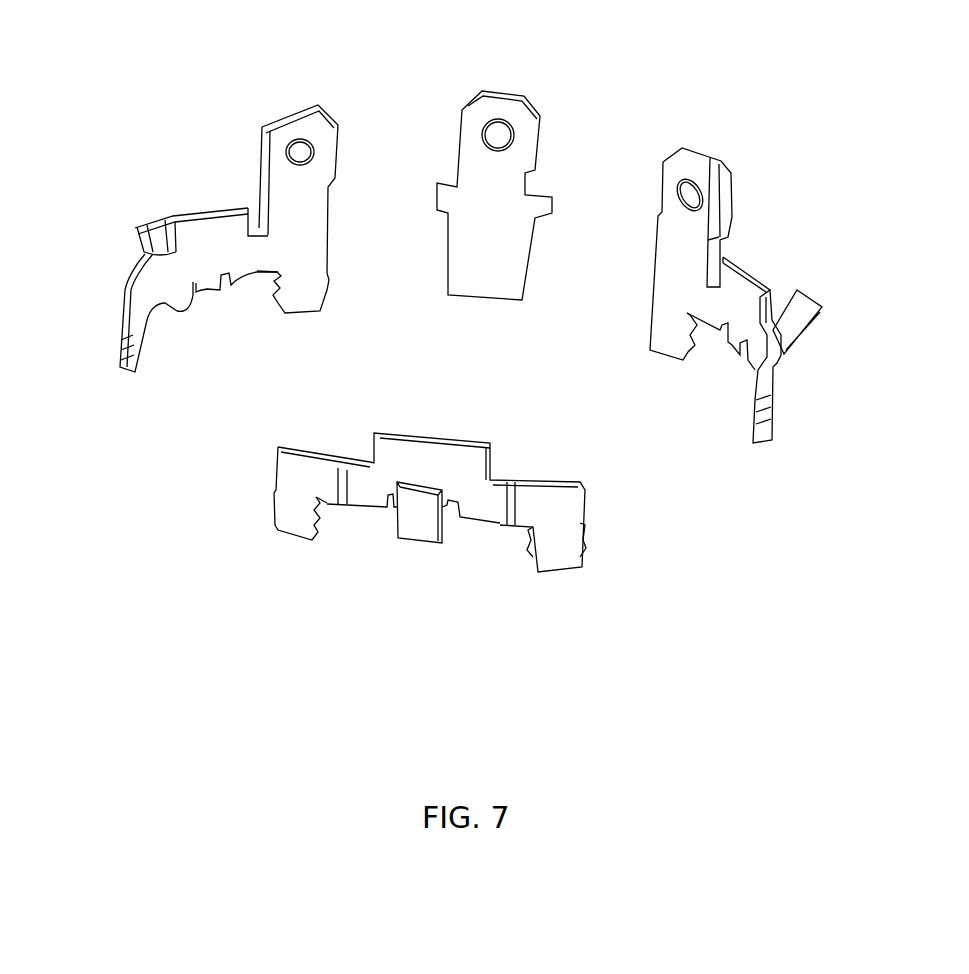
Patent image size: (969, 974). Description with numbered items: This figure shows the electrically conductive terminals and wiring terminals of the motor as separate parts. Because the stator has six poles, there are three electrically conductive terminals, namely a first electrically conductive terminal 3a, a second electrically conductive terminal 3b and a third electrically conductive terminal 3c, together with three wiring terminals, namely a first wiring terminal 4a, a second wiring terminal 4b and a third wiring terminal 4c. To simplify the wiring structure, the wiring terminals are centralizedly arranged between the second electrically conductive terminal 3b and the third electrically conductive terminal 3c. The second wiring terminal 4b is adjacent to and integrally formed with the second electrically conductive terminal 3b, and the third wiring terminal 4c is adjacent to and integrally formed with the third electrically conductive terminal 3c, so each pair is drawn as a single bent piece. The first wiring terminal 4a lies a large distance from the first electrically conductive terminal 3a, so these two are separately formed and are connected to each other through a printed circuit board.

The first electrically conductive terminal 3a is at (403, 452).
The second electrically conductive terminal 3b is at (205, 237).
The third electrically conductive terminal 3c is at (740, 293).
The first wiring terminal 4a is at (498, 108).
The second wiring terminal 4b is at (307, 128).
The third wiring terminal 4c is at (701, 163).